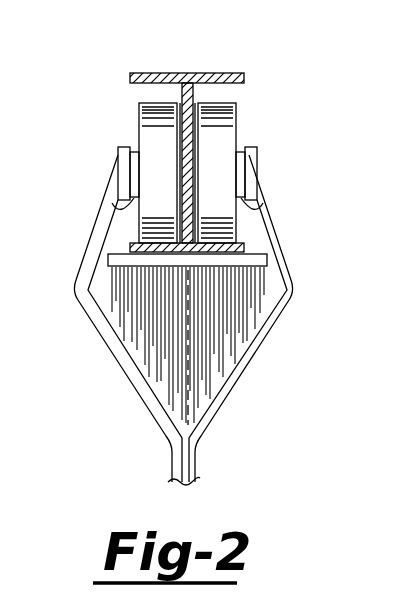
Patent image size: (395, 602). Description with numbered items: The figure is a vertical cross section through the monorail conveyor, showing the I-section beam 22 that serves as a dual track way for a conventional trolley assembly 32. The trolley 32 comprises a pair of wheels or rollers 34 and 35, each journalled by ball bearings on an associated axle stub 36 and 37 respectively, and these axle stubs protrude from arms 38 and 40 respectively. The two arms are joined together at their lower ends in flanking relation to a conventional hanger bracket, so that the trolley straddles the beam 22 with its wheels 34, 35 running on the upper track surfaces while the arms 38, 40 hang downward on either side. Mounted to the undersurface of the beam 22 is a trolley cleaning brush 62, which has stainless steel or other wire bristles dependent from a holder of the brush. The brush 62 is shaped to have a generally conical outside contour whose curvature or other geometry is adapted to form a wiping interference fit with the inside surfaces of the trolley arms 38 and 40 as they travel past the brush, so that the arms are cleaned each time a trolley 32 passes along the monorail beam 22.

The I-section beam 22 is at (216, 72).
The trolley assembly 32 is at (300, 272).
The wheel 34 is at (238, 120).
The wheel 35 is at (138, 104).
The axle stub 36 is at (264, 202).
The axle stub 37 is at (113, 204).
The arm 38 is at (279, 234).
The arm 40 is at (88, 262).
The trolley cleaning brush 62 is at (135, 374).